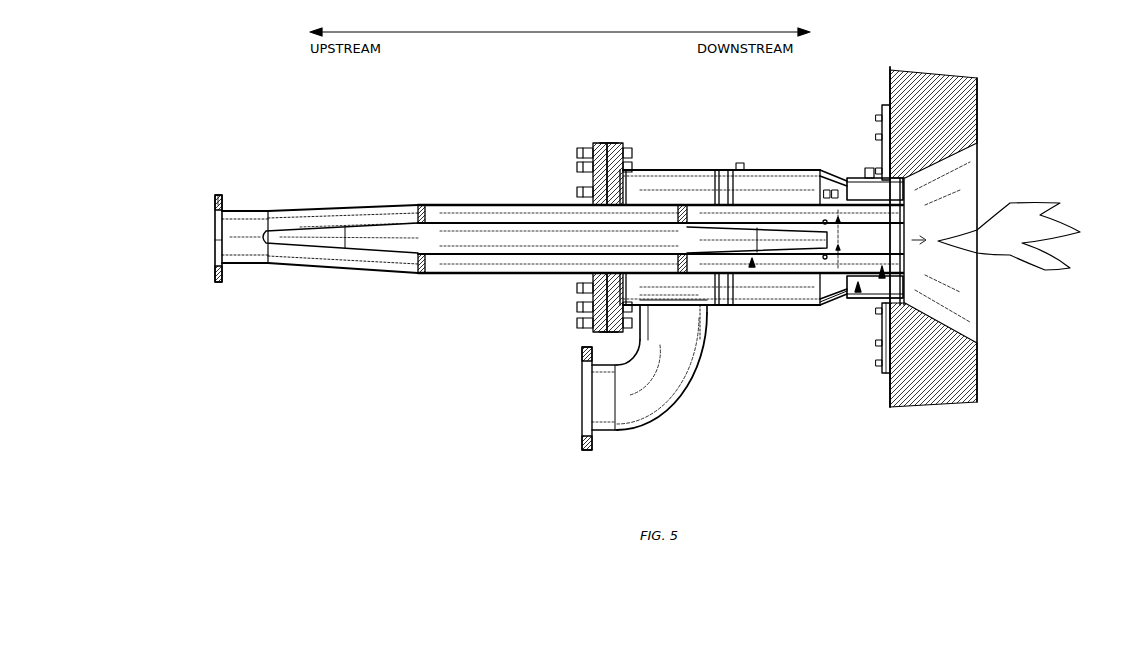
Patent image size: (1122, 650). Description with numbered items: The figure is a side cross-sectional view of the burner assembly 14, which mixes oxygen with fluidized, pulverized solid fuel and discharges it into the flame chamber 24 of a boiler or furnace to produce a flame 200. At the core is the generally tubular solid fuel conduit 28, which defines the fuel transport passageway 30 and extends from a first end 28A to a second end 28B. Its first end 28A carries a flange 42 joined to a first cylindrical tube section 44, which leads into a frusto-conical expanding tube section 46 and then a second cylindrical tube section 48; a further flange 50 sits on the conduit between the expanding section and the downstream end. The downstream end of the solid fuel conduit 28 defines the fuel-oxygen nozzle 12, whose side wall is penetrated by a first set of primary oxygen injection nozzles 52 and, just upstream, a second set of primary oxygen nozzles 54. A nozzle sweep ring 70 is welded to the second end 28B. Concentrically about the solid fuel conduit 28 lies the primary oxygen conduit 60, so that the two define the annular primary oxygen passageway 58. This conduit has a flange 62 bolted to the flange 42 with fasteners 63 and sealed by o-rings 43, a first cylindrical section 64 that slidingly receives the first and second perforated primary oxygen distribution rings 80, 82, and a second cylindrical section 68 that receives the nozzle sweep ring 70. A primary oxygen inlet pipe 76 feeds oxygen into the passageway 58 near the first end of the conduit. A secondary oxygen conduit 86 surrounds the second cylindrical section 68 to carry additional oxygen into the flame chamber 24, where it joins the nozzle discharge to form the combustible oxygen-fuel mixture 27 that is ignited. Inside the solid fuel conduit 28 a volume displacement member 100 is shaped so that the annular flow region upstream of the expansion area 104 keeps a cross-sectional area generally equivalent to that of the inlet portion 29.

The fuel-oxygen nozzle 12 is at (852, 305).
The burner assembly 14 is at (488, 353).
The flame chamber 24 is at (962, 287).
The combustible oxygen-fuel mixture 27 is at (978, 172).
The solid fuel conduit 28 is at (372, 205).
The first end of solid fuel conduit 28A is at (218, 190).
The second end of solid fuel conduit 28B is at (883, 352).
The inlet portion of solid fuel conduit 29 is at (205, 243).
The fuel transport passageway 30 is at (283, 255).
The flange 42 is at (226, 283).
The o-rings 43 is at (608, 140).
The first cylindrical tube section 44 is at (240, 212).
The frusto-conical expanding tube section 46 is at (318, 207).
The second cylindrical tube section 48 is at (500, 203).
The flange 50 is at (600, 143).
The first set of primary oxygen injection nozzles 52 is at (858, 178).
The second set of primary oxygen nozzles 54 is at (838, 180).
The primary oxygen passageway 58 is at (762, 291).
The primary oxygen conduit 60 is at (672, 170).
The flange 62 is at (620, 148).
The fasteners 63 is at (585, 149).
The first cylindrical section 64 is at (832, 300).
The second cylindrical section 68 is at (877, 308).
The nozzle sweep ring 70 is at (882, 152).
The primary oxygen inlet pipe 76 is at (673, 410).
The first perforated primary oxygen distribution ring 80 is at (716, 170).
The second perforated primary oxygen distribution ring 82 is at (741, 166).
The secondary oxygen conduit 86 is at (868, 168).
The volume displacement member 100 is at (446, 245).
The expansion area 104 is at (745, 308).
The flame 200 is at (1006, 203).